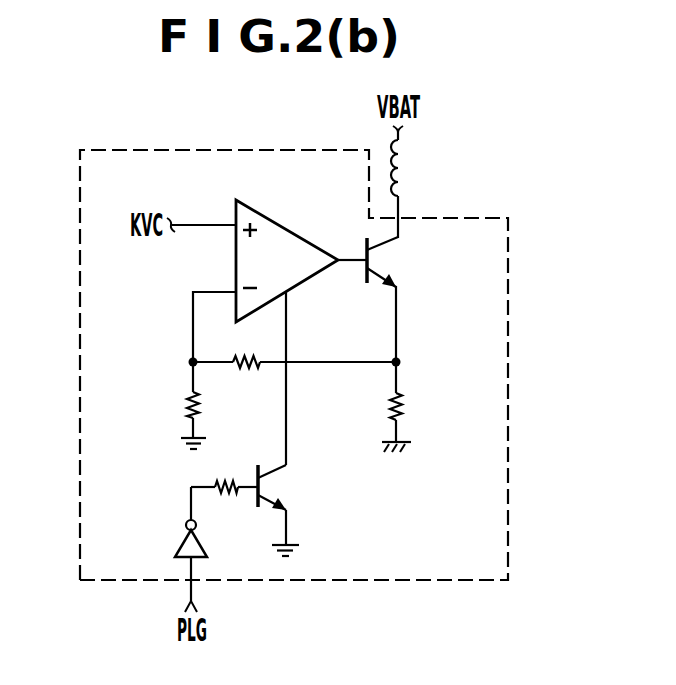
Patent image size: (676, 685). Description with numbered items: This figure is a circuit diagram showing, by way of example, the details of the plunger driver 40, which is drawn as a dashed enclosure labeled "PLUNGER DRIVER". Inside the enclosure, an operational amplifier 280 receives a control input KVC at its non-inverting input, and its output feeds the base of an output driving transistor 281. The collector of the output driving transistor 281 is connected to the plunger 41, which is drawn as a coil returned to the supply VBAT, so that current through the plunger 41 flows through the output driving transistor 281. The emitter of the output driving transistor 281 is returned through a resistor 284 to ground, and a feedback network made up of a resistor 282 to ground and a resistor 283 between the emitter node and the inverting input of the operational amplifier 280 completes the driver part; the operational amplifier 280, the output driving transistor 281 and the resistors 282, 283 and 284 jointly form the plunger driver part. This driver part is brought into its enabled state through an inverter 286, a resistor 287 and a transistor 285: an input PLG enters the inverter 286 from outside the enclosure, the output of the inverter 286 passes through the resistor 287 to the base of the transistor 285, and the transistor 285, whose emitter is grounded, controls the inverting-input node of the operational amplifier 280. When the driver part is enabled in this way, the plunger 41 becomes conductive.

The plunger driver 40 is at (508, 258).
The plunger 41 is at (407, 176).
The operational amplifier 280 is at (300, 233).
The output driving transistor 281 is at (382, 258).
The resistor 282 is at (184, 398).
The resistor 283 is at (246, 377).
The resistor 284 is at (405, 405).
The transistor 285 is at (272, 483).
The inverter 286 is at (182, 547).
The resistor 287 is at (230, 498).